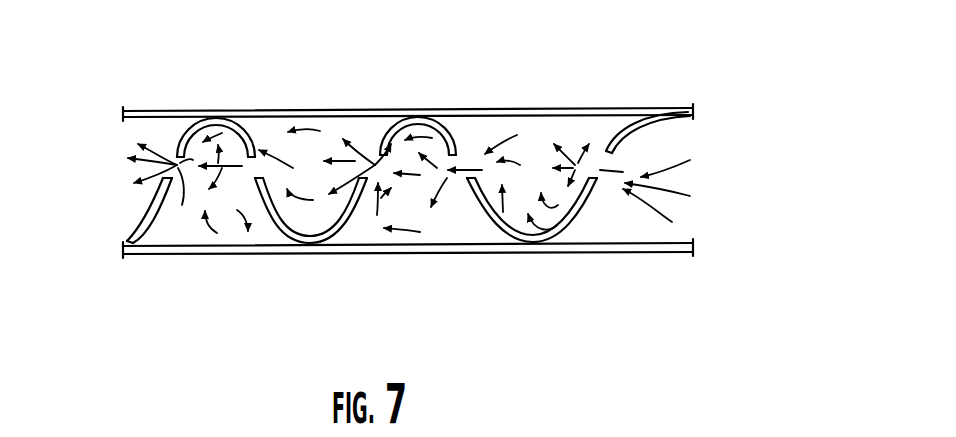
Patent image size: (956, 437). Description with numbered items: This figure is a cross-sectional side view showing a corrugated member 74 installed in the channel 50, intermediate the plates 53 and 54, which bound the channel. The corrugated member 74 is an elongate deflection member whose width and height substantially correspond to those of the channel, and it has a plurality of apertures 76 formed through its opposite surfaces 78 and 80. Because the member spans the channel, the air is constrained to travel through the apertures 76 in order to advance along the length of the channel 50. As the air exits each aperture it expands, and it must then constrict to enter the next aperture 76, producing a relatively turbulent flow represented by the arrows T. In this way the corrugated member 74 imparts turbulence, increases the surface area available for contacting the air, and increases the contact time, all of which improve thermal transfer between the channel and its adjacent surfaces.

The channel 50 is at (686, 142).
The plate 53 is at (573, 170).
The plate 54 is at (612, 254).
The corrugated member 74 is at (253, 130).
The apertures 76 is at (176, 168).
The surface 78 is at (496, 223).
The surface 80 is at (455, 136).
The arrows T is at (353, 143).